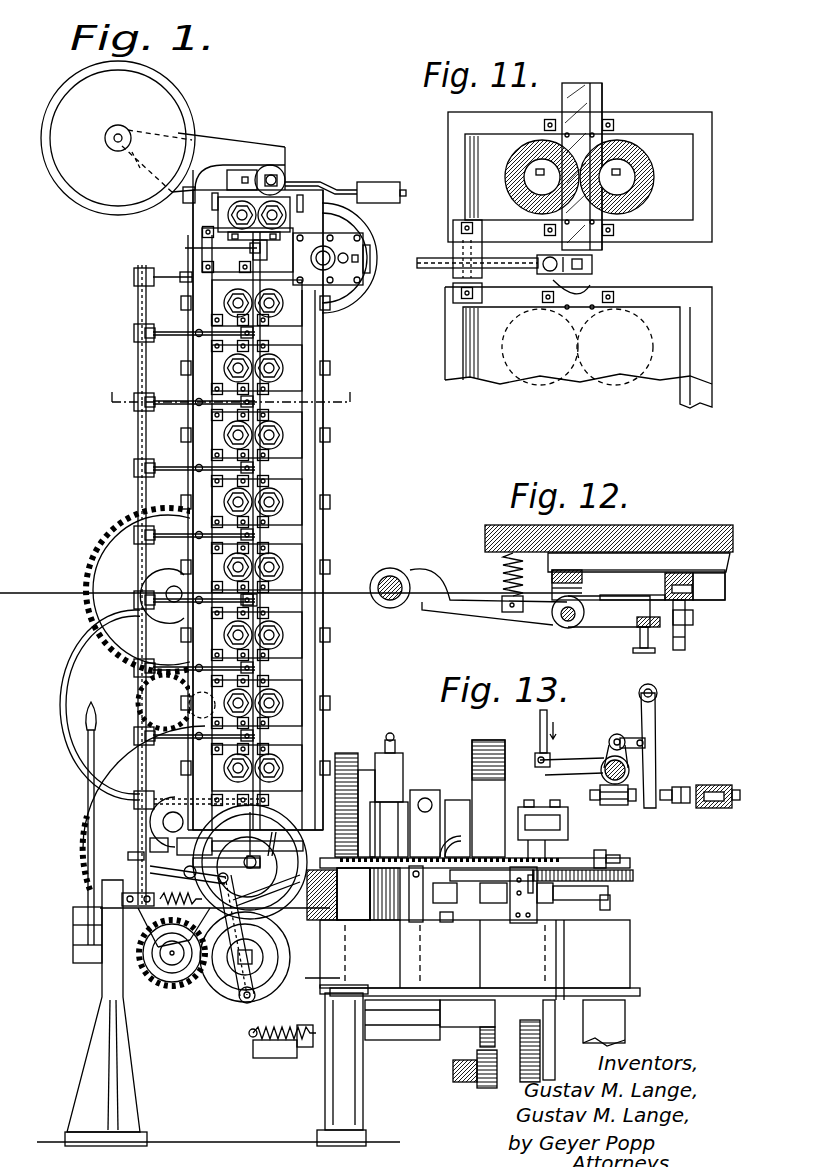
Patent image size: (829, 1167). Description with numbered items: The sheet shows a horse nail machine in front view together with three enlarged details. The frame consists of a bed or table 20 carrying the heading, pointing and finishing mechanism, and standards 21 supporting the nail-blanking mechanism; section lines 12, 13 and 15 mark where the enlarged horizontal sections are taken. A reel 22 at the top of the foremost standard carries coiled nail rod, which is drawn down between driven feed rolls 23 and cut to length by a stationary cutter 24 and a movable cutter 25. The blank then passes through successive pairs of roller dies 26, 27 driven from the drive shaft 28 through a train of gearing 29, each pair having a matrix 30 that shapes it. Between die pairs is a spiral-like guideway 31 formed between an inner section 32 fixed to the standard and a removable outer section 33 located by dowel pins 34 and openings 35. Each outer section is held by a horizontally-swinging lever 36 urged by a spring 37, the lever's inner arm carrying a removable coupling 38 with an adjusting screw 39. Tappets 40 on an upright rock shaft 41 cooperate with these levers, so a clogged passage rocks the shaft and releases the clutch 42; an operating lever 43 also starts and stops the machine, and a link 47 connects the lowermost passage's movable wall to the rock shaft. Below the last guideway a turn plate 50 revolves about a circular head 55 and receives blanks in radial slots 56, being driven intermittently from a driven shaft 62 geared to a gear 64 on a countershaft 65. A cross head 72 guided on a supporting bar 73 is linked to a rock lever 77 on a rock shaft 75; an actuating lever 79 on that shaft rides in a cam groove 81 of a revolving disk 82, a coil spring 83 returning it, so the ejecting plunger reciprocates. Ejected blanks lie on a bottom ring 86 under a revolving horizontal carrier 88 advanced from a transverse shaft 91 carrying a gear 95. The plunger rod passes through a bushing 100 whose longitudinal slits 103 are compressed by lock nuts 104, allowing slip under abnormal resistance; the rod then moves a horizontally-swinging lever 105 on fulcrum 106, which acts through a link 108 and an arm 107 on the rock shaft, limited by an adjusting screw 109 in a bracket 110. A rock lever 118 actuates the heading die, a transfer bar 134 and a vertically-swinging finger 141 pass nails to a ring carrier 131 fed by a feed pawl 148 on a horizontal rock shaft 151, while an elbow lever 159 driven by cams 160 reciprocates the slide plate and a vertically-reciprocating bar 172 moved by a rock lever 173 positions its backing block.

In FIG. 1, the section line 12 is at (230, 394).
In FIG. 1, the section line 13 is at (242, 850).
In FIG. 1, the section line 15 is at (134, 799).
In FIG. 13, the bed or table 20 is at (480, 958).
In FIG. 1, the uprights or standards 21 is at (310, 469).
In FIG. 11, the uprights or standards 21 is at (492, 372).
In FIG. 12, the uprights or standards 21 is at (494, 526).
In FIG. 1, the reel 22 is at (118, 138).
In FIG. 1, the driven feed rolls 23 is at (270, 198).
In FIG. 1, the stationary cutter 24 is at (205, 247).
In FIG. 1, the movable cutter 25 is at (331, 258).
In FIG. 1, the roller die 26 is at (226, 366).
In FIG. 11, the roller die 26 is at (522, 177).
In FIG. 1, the roller die 27 is at (284, 366).
In FIG. 11, the roller die 27 is at (638, 177).
In FIG. 1, the drive shaft 28 is at (176, 702).
In FIG. 1, the train of gearing 29 is at (92, 585).
In FIG. 11, the matrix 30 is at (530, 210).
In FIG. 11, the guideway 31 is at (619, 166).
In FIG. 12, the guideway 31 is at (684, 582).
In FIG. 11, the inner guideway section 32 is at (562, 99).
In FIG. 12, the inner guideway section 32 is at (672, 570).
In FIG. 1, the outer guideway section 33 is at (258, 605).
In FIG. 11, the outer guideway section 33 is at (592, 290).
In FIG. 12, the outer guideway section 33 is at (690, 599).
In FIG. 11, the dowel pins 34 is at (544, 125).
In FIG. 12, the dowel pins 34 is at (668, 589).
In FIG. 12, the openings 35 is at (692, 598).
In FIG. 1, the horizontally-swinging lever 36 is at (184, 472).
In FIG. 11, the horizontally-swinging lever 36 is at (512, 266).
In FIG. 12, the horizontally-swinging lever 36 is at (585, 627).
In FIG. 12, the spring 37 is at (502, 575).
In FIG. 1, the removable extension or coupling 38 is at (256, 537).
In FIG. 11, the removable extension or coupling 38 is at (576, 276).
In FIG. 12, the removable extension or coupling 38 is at (636, 640).
In FIG. 11, the adjusting screw 39 is at (594, 266).
In FIG. 12, the adjusting screw 39 is at (688, 636).
In FIG. 1, the tappets 40 is at (163, 622).
In FIG. 12, the tappets 40 is at (418, 575).
In FIG. 1, the upright rock shaft 41 is at (138, 690).
In FIG. 12, the upright rock shaft 41 is at (388, 602).
In FIG. 13, the upright rock shaft 41 is at (604, 765).
In FIG. 1, the clutch 42 is at (70, 682).
In FIG. 1, the operating lever 43 is at (86, 736).
In FIG. 1, the link 47 is at (166, 805).
In FIG. 1, the turn plate or revolving carrier 50 is at (266, 896).
In FIG. 1, the circular head 55 is at (247, 867).
In FIG. 1, the slots 56 is at (176, 822).
In FIG. 1, the driven shaft 62 is at (278, 950).
In FIG. 1, the gear 64 is at (172, 968).
In FIG. 1, the countershaft 65 is at (170, 960).
In FIG. 1, the cross head 72 is at (240, 851).
In FIG. 13, the cross head 72 is at (716, 791).
In FIG. 1, the supporting bar 73 is at (262, 848).
In FIG. 1, the rock shaft 75 is at (243, 1003).
In FIG. 1, the rock lever 77 is at (290, 893).
In FIG. 1, the actuating lever 79 is at (335, 975).
In FIG. 1, the cam groove 81 is at (232, 975).
In FIG. 1, the revolving disk 82 is at (312, 965).
In FIG. 1, the coil spring 83 is at (308, 1054).
In FIG. 13, the bottom ring or plate 86 is at (634, 877).
In FIG. 13, the revolving horizontal carrier 88 is at (406, 855).
In FIG. 13, the transverse shaft 91 is at (566, 830).
In FIG. 13, the gear 95 is at (346, 762).
In FIG. 13, the bushing 100 is at (714, 810).
In FIG. 13, the longitudinal slits 103 is at (666, 790).
In FIG. 13, the lock nuts 104 is at (676, 804).
In FIG. 1, the horizontally-swinging lever 105 is at (158, 852).
In FIG. 13, the horizontally-swinging lever 105 is at (656, 727).
In FIG. 13, the fulcrum 106 is at (657, 693).
In FIG. 13, the arm 107 is at (615, 734).
In FIG. 13, the link 108 is at (645, 747).
In FIG. 13, the adjusting screw 109 is at (634, 802).
In FIG. 1, the bracket 110 is at (138, 897).
In FIG. 13, the bracket 110 is at (610, 806).
In FIG. 13, the rock lever 118 is at (390, 785).
In FIG. 13, the ring carrier 131 is at (493, 870).
In FIG. 13, the transfer bar 134 is at (456, 860).
In FIG. 13, the vertically-swinging finger 141 is at (420, 874).
In FIG. 13, the feed pawl 148 is at (622, 861).
In FIG. 13, the horizontal rock shaft 151 is at (612, 900).
In FIG. 13, the elbow lever 159 is at (484, 1090).
In FIG. 13, the cams 160 is at (453, 1065).
In FIG. 13, the vertically-reciprocating bar 172 is at (560, 990).
In FIG. 13, the rock lever 173 is at (536, 956).